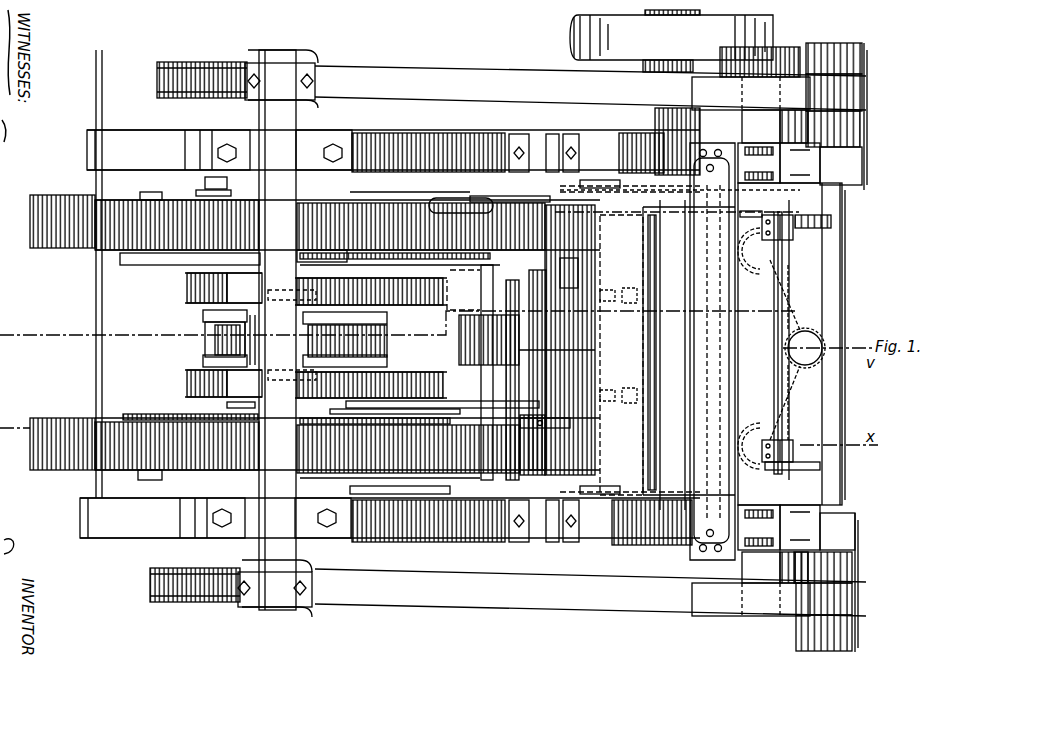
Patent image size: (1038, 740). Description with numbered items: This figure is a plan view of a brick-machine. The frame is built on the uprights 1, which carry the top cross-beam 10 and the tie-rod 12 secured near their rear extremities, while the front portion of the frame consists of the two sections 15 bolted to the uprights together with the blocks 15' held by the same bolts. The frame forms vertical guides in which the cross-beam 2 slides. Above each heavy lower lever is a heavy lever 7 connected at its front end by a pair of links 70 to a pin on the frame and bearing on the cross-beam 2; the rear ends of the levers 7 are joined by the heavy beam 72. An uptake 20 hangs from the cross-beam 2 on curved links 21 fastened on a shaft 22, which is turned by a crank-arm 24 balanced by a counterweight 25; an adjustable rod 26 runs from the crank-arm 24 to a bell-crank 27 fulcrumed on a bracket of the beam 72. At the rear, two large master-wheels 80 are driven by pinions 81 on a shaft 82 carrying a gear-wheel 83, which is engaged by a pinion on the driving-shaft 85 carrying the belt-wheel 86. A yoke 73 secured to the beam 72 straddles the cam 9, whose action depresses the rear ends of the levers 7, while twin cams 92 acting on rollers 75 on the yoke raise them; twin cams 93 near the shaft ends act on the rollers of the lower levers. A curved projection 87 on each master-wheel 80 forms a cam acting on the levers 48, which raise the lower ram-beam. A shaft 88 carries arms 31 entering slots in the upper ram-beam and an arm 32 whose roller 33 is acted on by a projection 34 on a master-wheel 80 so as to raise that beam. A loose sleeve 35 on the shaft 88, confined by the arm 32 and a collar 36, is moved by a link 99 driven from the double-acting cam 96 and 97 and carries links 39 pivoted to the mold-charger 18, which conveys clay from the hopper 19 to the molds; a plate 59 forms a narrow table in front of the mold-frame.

The uprights 1 is at (653, 546).
The cross-beam 2 is at (767, 346).
The heavy lever 7 is at (590, 341).
The cam 9 is at (206, 347).
The top cross-beam 10 is at (714, 150).
The tie-rod 12 is at (96, 303).
The sections 15 is at (830, 346).
The blocks 15' is at (759, 346).
The mold-charger 18 is at (621, 355).
The hopper 19 is at (689, 355).
The uptake 20 is at (781, 348).
The curved links 21 is at (806, 474).
The shaft 22 is at (780, 364).
The crank-arm 24 is at (784, 215).
The counterweight 25 is at (815, 215).
The adjustable rod 26 is at (639, 212).
The bell-crank 27 is at (323, 334).
The arms 31 is at (608, 185).
The arm 32 is at (463, 290).
The roller 33 is at (468, 262).
The projection 34 is at (185, 258).
The loose sleeve 35 is at (561, 375).
The collar 36 is at (570, 422).
The links 39 is at (586, 296).
The levers 48 is at (205, 184).
The plate 59 is at (838, 278).
The links 70 is at (862, 68).
The heavy beam 72 is at (287, 330).
The yoke 73 is at (202, 316).
The rollers 75 is at (240, 335).
The master-wheels 80 is at (78, 194).
The pinions 81 is at (580, 245).
The shaft 82 is at (578, 278).
The gear-wheel 83 is at (460, 351).
The driving-shaft 85 is at (658, 121).
The belt-wheel 86 is at (685, 43).
The curved projection 87 is at (157, 195).
The shaft 88 is at (560, 442).
The twin cams 92 is at (187, 290).
The twin cams 93 is at (188, 70).
The double-acting cam 96 is at (156, 413).
The double-acting cam 97 is at (420, 422).
The link 99 is at (227, 404).